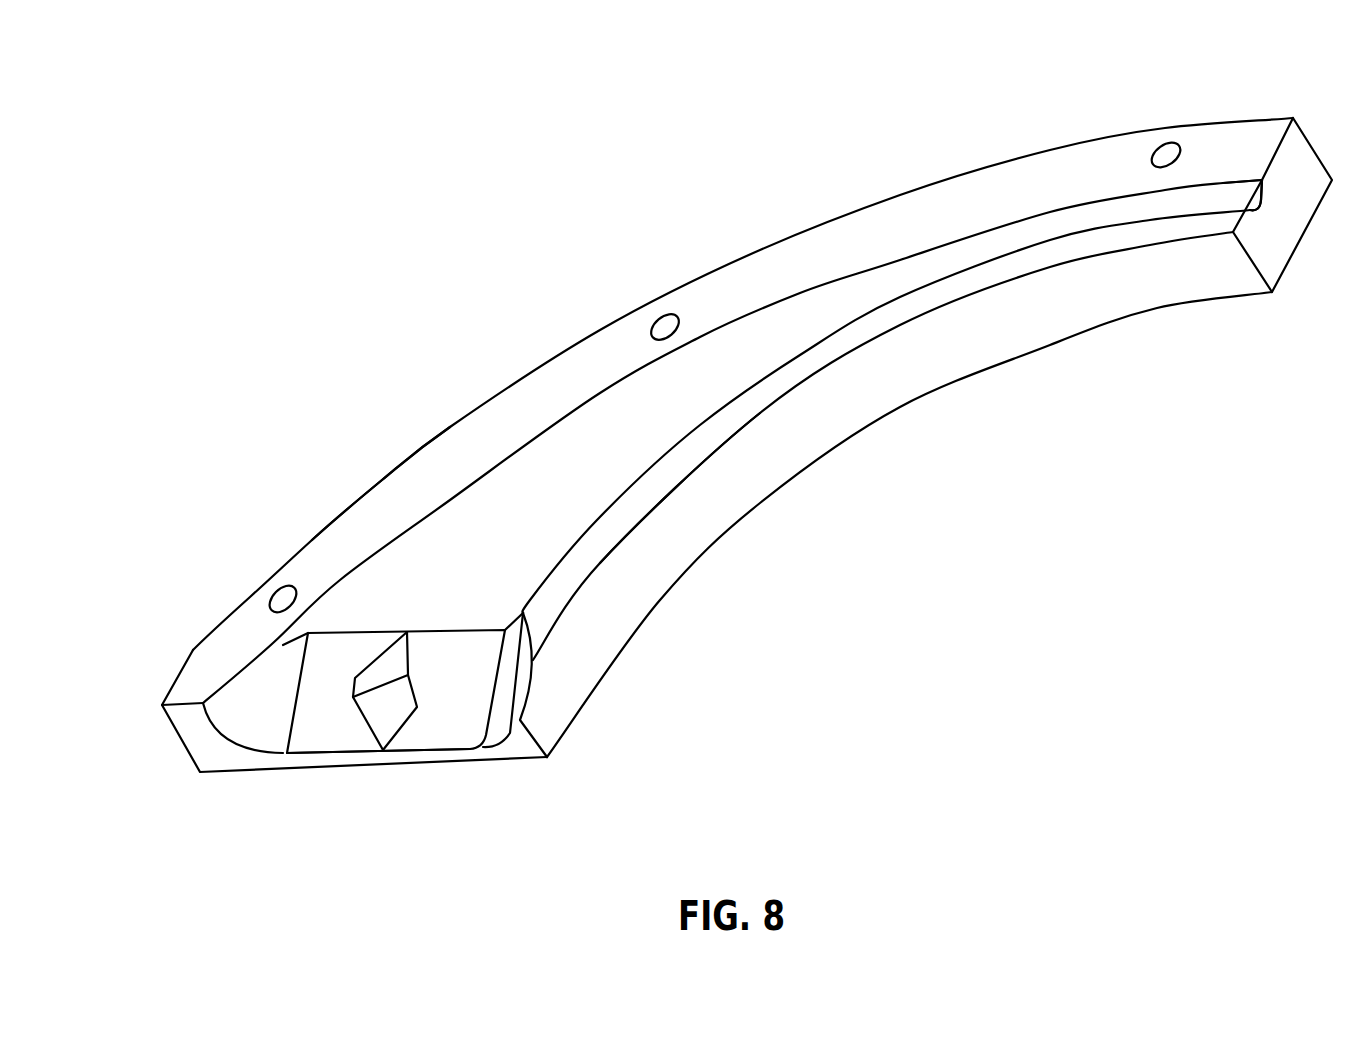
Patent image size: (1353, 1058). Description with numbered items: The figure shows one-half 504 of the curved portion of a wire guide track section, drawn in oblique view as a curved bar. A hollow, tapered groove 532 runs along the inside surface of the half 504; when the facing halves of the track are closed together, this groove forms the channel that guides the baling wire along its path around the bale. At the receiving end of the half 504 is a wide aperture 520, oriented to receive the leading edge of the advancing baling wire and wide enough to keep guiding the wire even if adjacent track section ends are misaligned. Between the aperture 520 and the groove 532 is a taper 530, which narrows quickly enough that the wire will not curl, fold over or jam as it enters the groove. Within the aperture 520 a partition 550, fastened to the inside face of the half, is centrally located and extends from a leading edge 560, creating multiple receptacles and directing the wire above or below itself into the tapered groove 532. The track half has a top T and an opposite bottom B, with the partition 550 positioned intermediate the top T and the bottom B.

The one-half of the curved portion of the wire guide track 504 is at (1001, 569).
The wide aperture 520 is at (449, 732).
The taper 530 is at (657, 641).
The hollow groove 532 is at (1229, 192).
The partition 550 is at (370, 683).
The leading edge 560 is at (463, 750).
The top T is at (658, 547).
The bottom B is at (388, 462).